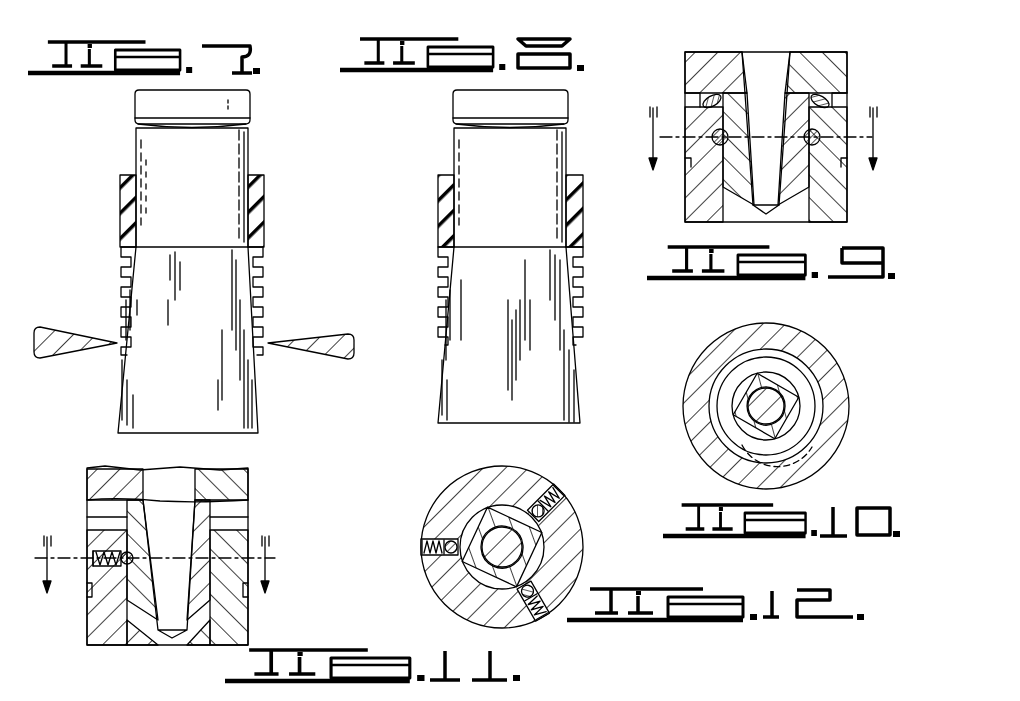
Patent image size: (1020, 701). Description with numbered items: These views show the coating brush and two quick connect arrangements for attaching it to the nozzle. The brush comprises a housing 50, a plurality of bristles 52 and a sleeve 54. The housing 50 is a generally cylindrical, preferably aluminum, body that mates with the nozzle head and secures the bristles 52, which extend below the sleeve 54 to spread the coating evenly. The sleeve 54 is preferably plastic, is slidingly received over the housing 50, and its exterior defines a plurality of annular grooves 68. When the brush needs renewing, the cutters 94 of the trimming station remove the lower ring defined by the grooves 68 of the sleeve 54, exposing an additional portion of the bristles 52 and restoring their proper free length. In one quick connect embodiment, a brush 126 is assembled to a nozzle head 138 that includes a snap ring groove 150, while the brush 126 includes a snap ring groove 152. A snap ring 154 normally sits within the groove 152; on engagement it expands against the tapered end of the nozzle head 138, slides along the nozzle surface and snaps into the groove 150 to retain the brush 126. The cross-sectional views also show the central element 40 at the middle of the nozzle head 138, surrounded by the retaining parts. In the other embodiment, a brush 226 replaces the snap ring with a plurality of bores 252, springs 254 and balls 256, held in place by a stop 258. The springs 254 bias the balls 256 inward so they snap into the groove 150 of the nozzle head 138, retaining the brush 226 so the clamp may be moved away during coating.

In FIG. 7, the housing 50 is at (232, 157).
In FIG. 8, the housing 50 is at (465, 148).
In FIG. 7, the bristles 52 is at (245, 400).
In FIG. 8, the bristles 52 is at (579, 400).
In FIG. 7, the sleeve 54 is at (263, 213).
In FIG. 8, the sleeve 54 is at (440, 202).
In FIG. 7, the annular grooves 68 is at (264, 293).
In FIG. 8, the annular grooves 68 is at (574, 310).
In FIG. 7, the cutters 94 is at (60, 340).
In FIG. 9, the nozzle head 138 is at (830, 66).
In FIG. 10, the nozzle head 138 is at (793, 397).
In FIG. 11, the nozzle head 138 is at (240, 484).
In FIG. 12, the nozzle head 138 is at (478, 530).
In FIG. 9, the snap ring groove 150 is at (708, 136).
In FIG. 9, the snap ring groove 152 is at (744, 112).
In FIG. 10, the snap ring groove 152 is at (788, 370).
In FIG. 9, the snap ring 154 is at (802, 134).
In FIG. 9, the brush 126 is at (824, 231).
In FIG. 10, the brush 126 is at (815, 453).
In FIG. 10, the shaft 40 is at (772, 410).
In FIG. 12, the shaft 40 is at (520, 542).
In FIG. 9, the brush 226 is at (766, 137).
In FIG. 11, the brush 226 is at (238, 613).
In FIG. 12, the brush 226 is at (462, 587).
In FIG. 11, the bores 252 is at (153, 540).
In FIG. 11, the springs 254 is at (122, 566).
In FIG. 12, the springs 254 is at (526, 528).
In FIG. 11, the balls 256 is at (132, 572).
In FIG. 12, the balls 256 is at (513, 510).
In FIG. 11, the stop 258 is at (88, 556).
In FIG. 12, the stop 258 is at (541, 481).